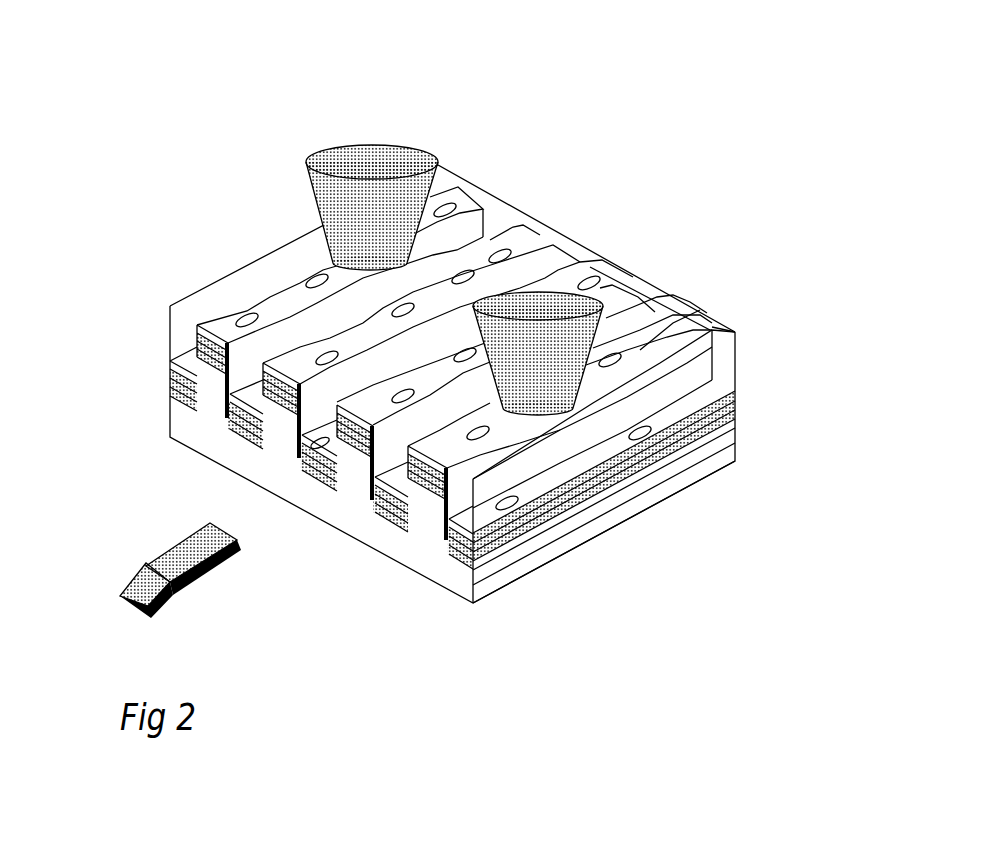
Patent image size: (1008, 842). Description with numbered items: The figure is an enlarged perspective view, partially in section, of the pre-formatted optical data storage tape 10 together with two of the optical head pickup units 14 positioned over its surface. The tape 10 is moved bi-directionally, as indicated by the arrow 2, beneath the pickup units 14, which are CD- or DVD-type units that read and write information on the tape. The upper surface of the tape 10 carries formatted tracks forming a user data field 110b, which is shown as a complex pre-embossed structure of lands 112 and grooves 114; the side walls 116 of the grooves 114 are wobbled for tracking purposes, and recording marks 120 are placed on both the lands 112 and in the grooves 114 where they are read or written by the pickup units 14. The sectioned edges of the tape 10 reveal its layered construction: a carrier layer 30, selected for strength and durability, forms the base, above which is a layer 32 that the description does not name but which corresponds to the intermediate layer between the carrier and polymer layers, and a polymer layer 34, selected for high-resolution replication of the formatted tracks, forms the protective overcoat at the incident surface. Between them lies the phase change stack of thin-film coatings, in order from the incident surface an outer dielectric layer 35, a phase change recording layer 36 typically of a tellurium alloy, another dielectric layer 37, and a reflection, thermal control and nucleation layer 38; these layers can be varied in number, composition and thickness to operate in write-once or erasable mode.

The pre-formatted optical data storage tape 10 is at (760, 438).
The optical head pickup units 14 is at (489, 297).
The carrier layer 30 is at (485, 592).
The intermediate layer 32 is at (505, 560).
The polymer layer 34 is at (723, 355).
The outer dielectric layer 35 is at (657, 442).
The phase change recording layer 36 is at (620, 460).
The dielectric layer 37 is at (600, 487).
The reflection/thermal control/nucleation layer 38 is at (588, 508).
The user data field 110b is at (722, 308).
The lands 112 is at (200, 357).
The grooves 114 is at (557, 270).
The side walls 116 is at (641, 360).
The recording marks 120 is at (303, 275).
The arrow 2 is at (195, 583).